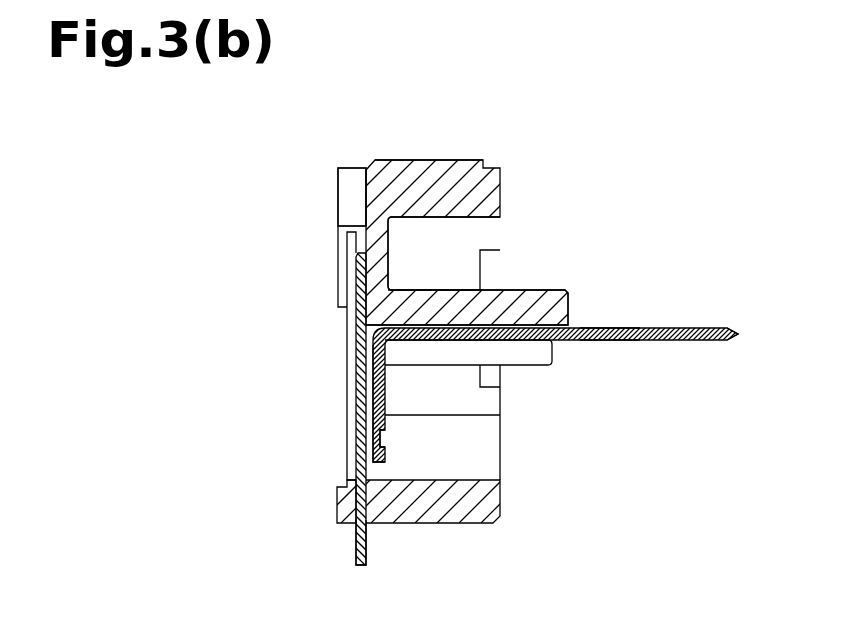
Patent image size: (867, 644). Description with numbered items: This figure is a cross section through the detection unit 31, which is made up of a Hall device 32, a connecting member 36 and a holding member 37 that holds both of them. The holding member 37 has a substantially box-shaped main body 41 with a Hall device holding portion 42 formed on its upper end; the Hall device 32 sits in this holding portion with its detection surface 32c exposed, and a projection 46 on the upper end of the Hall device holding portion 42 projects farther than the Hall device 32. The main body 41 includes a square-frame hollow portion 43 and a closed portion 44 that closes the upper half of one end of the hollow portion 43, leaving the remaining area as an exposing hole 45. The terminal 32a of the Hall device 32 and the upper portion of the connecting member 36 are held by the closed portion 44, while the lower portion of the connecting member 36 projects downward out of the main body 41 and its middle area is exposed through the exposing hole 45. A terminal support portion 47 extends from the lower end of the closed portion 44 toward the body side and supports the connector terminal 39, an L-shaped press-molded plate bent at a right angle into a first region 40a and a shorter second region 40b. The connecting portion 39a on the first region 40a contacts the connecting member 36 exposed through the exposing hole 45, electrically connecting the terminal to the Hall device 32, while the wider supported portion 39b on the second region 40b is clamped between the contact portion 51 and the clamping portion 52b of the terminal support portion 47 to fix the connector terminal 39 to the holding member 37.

The detection unit 31 is at (663, 472).
The Hall device 32 is at (345, 168).
The terminal 32a is at (350, 264).
The detection surface 32c is at (337, 193).
The connecting member 36 is at (362, 565).
The holding member 37 is at (500, 455).
The connector terminal 39 is at (705, 340).
The connecting portion 39a is at (385, 453).
The supported portion 39b is at (610, 340).
The first region 40a is at (740, 334).
The second region 40b is at (380, 462).
The main body 41 is at (478, 523).
The Hall device holding portion 42 is at (500, 201).
The hollow portion 43 is at (337, 510).
The closed portion 44 is at (382, 270).
The exposing hole 45 is at (355, 338).
The projection 46 is at (463, 160).
The terminal support portion 47 is at (568, 297).
The contact portion 51 is at (530, 298).
The clamping portion 52b is at (535, 358).